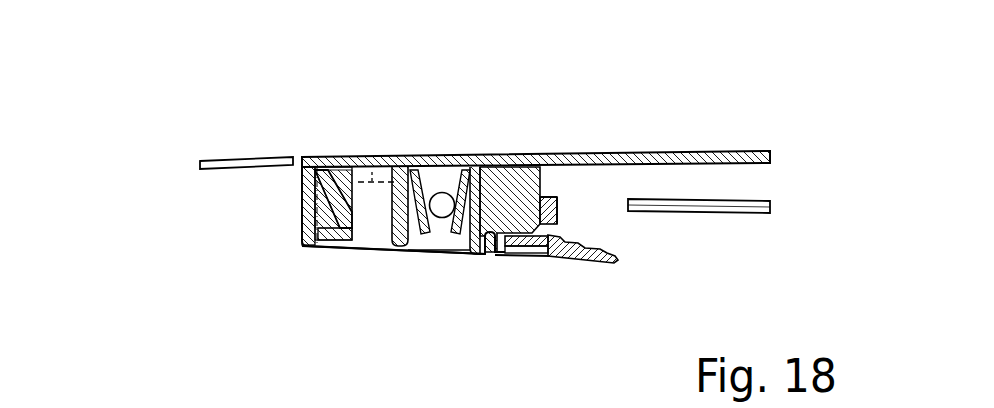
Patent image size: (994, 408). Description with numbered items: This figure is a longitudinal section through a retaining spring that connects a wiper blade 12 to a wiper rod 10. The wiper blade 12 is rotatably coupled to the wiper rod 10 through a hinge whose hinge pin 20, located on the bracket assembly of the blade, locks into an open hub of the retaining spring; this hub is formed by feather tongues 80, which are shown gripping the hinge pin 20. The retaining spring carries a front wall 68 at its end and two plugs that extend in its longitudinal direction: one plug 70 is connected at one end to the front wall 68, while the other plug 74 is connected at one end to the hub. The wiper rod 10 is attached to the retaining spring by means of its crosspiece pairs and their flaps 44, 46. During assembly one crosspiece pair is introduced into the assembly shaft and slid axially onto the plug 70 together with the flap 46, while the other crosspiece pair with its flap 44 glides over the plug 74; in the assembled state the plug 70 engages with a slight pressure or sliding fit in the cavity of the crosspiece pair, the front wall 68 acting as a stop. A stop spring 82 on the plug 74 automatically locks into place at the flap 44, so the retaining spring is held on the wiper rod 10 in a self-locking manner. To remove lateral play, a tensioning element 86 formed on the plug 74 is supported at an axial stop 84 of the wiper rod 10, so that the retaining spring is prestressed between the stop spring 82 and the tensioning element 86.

The wiper rod 10 is at (745, 152).
The wiper blade 12 is at (227, 157).
The hinge pin 20 is at (442, 203).
The flap 44 is at (518, 256).
The flap 46 is at (328, 247).
The front wall 68 is at (310, 213).
The plug 70 is at (325, 157).
The plug 74 is at (522, 175).
The feather tongues 80 is at (462, 228).
The stop spring 82 is at (577, 263).
The axial stop 84 is at (557, 199).
The tensioning element 86 is at (583, 114).